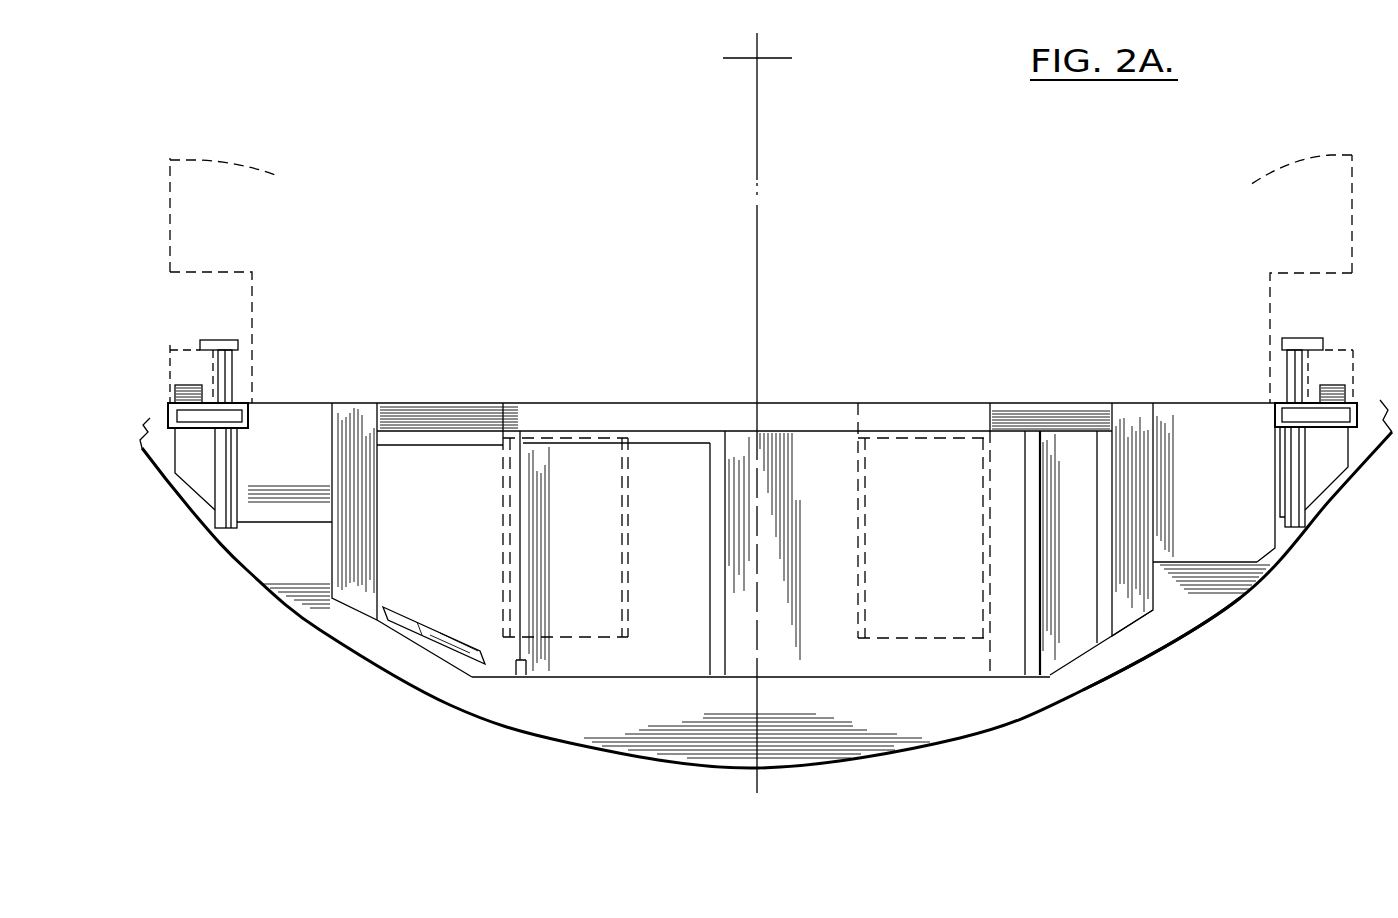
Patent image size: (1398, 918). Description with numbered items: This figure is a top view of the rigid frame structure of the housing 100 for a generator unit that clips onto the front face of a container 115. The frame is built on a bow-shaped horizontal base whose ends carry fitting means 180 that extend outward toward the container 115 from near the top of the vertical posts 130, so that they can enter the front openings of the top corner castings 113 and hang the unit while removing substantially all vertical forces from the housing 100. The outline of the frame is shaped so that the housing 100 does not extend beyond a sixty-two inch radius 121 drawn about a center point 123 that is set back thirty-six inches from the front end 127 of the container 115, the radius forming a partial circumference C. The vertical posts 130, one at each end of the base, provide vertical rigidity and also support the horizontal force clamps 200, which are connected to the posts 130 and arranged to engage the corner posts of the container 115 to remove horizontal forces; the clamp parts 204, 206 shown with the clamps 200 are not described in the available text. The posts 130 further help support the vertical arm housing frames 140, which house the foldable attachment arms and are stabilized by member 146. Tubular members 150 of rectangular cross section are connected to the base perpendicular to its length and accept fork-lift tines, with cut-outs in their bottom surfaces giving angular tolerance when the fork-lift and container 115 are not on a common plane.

The housing 100 is at (380, 717).
The partial circumference C is at (1138, 668).
The top corner castings 113 is at (168, 345).
The container 115 is at (322, 245).
The radius 121 is at (760, 212).
The center point 123 is at (760, 60).
The front end of the container 127 is at (1005, 403).
The vertical posts 130 is at (248, 423).
The arm housing frames 140 is at (362, 413).
The stabilizing member 146 is at (630, 428).
The tubular members 150 is at (577, 637).
The fitting means 180 is at (190, 413).
The horizontal force clamps 200 is at (233, 388).
The bolt shaft 204 is at (233, 370).
The bolt head 206 is at (237, 340).